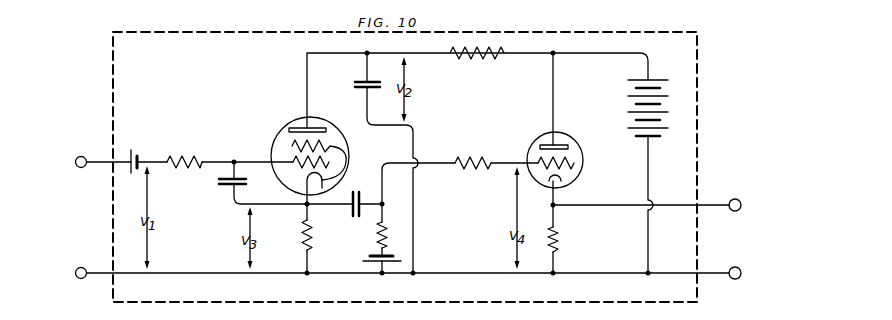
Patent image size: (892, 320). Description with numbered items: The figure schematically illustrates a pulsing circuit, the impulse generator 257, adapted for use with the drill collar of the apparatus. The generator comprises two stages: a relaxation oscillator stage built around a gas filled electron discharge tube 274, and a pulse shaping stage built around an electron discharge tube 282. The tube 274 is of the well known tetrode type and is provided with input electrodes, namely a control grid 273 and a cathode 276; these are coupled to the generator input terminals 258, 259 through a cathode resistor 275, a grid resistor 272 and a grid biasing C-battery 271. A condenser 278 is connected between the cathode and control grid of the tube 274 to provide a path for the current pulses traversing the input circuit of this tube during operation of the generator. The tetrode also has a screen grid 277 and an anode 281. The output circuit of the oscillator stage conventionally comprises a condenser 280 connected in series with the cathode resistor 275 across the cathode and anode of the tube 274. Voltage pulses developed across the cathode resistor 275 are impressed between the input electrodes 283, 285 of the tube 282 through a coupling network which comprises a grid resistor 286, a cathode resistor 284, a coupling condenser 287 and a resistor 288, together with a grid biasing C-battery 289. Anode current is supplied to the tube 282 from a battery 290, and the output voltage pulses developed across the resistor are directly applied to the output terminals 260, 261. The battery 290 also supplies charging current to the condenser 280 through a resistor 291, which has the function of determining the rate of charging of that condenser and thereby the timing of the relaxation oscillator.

The impulse generator 257 is at (700, 100).
The input terminal 258 is at (82, 156).
The input terminal 259 is at (82, 267).
The output terminal 260 is at (738, 201).
The output terminal 261 is at (738, 268).
The grid biasing C-battery 271 is at (134, 150).
The grid resistor 272 is at (202, 155).
The control grid 273 is at (290, 166).
The gas filled electron discharge tube 274 is at (272, 151).
The cathode resistor 275 is at (302, 238).
The cathode 276 is at (295, 183).
The screen grid 277 is at (335, 147).
The condenser 278 is at (217, 186).
The condenser 280 is at (356, 84).
The anode 281 is at (561, 144).
The electron discharge tube 282 is at (579, 172).
The input electrode 283 is at (546, 179).
The cathode resistor 284 is at (559, 240).
The input electrode 285 is at (577, 163).
The grid resistor 286 is at (489, 155).
The coupling condenser 287 is at (351, 202).
The resistor 288 is at (378, 226).
The grid biasing C-battery 289 is at (368, 259).
The battery 290 is at (632, 96).
The resistor 291 is at (482, 58).